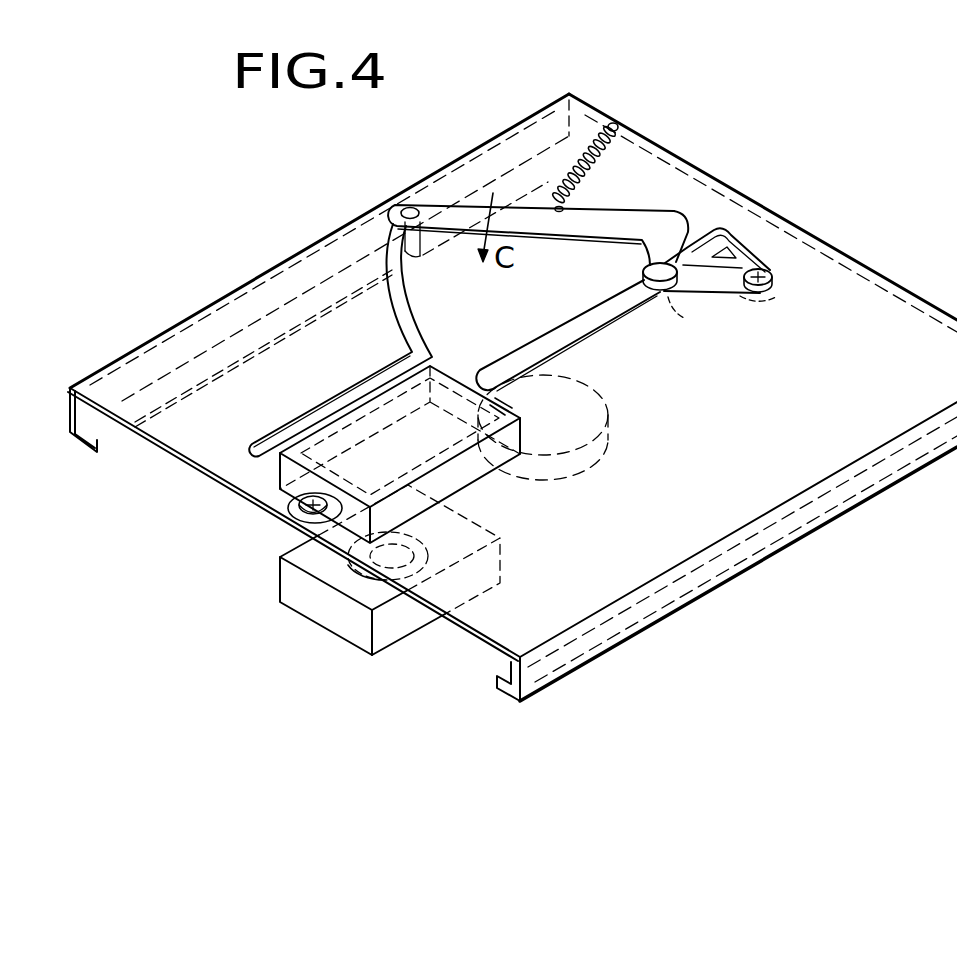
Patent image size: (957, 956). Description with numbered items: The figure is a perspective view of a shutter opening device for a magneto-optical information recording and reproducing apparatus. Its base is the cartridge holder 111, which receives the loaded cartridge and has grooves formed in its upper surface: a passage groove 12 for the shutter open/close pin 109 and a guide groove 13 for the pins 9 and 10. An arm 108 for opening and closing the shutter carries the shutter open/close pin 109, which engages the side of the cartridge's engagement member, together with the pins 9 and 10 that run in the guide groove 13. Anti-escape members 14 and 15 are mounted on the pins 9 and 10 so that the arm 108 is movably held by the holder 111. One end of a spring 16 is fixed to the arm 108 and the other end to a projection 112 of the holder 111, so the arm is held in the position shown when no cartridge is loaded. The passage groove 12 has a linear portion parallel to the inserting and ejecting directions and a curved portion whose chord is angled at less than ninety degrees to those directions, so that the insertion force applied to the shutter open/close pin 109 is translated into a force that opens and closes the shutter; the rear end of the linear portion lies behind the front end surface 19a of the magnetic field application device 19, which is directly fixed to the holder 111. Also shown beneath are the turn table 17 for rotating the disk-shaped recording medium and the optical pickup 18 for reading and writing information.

The pin 9 is at (683, 261).
The pin 10 is at (773, 277).
The passage groove 12 is at (408, 332).
The guide groove 13 is at (747, 250).
The anti-escape member 14 is at (664, 294).
The anti-escape member 15 is at (780, 298).
The spring 16 is at (599, 118).
The turn table 17 is at (580, 475).
The optical pickup 18 is at (327, 620).
The magnetic field application device 19 is at (277, 477).
The front end surface 19a is at (447, 387).
The arm 108 is at (673, 217).
The shutter open/close pin 109 is at (396, 214).
The cartridge holder 111 is at (627, 573).
The projection 112 is at (616, 124).